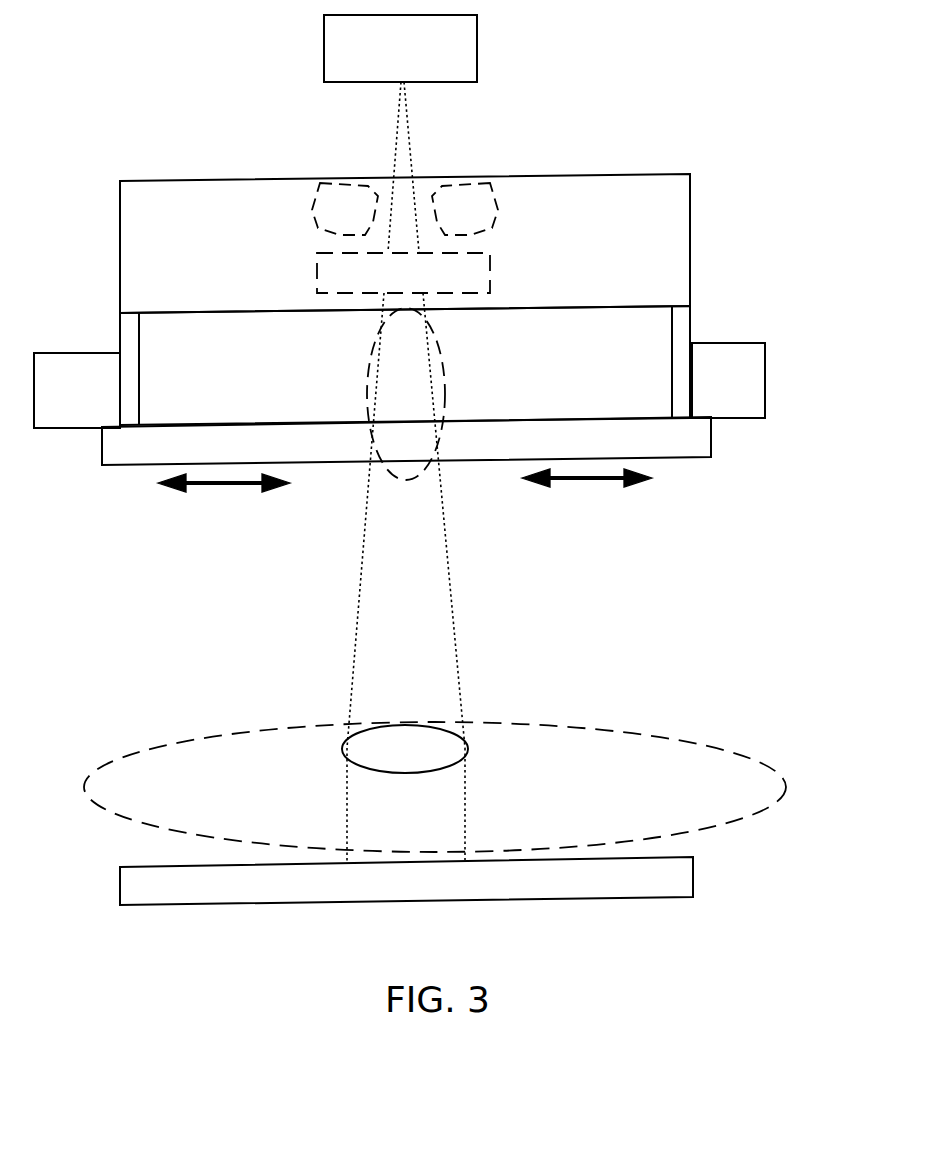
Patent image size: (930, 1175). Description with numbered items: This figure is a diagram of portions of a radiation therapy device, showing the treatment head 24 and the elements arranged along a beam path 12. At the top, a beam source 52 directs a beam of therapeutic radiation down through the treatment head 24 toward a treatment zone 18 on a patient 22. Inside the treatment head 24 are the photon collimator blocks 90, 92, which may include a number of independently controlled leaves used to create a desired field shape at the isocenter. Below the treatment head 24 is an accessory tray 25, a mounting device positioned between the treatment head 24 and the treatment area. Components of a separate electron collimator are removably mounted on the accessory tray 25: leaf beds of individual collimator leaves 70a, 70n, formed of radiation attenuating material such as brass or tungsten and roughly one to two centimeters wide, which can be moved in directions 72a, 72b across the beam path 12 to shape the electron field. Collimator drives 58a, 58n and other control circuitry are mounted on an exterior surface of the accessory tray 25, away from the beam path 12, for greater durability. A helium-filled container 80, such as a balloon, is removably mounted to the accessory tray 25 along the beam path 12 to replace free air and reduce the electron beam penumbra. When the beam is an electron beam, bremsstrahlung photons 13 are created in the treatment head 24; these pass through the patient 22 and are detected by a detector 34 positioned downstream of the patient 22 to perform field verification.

The beam source 52 is at (477, 50).
The beam path 12 is at (410, 165).
The treatment head 24 is at (690, 230).
The accessory tray 25 is at (690, 316).
The collimator block 90 is at (405, 209).
The collimator block 92 is at (403, 273).
The container 80 is at (438, 350).
The collimator drive 58a is at (100, 405).
The collimator drive 58n is at (752, 397).
The collimator leaf 70a is at (260, 458).
The collimator leaf 70n is at (595, 452).
The direction 72a is at (224, 495).
The direction 72b is at (587, 490).
The patient 22 is at (617, 726).
The treatment zone 18 is at (430, 730).
The bremsstrahlung photons 13 is at (466, 818).
The detector 34 is at (693, 876).